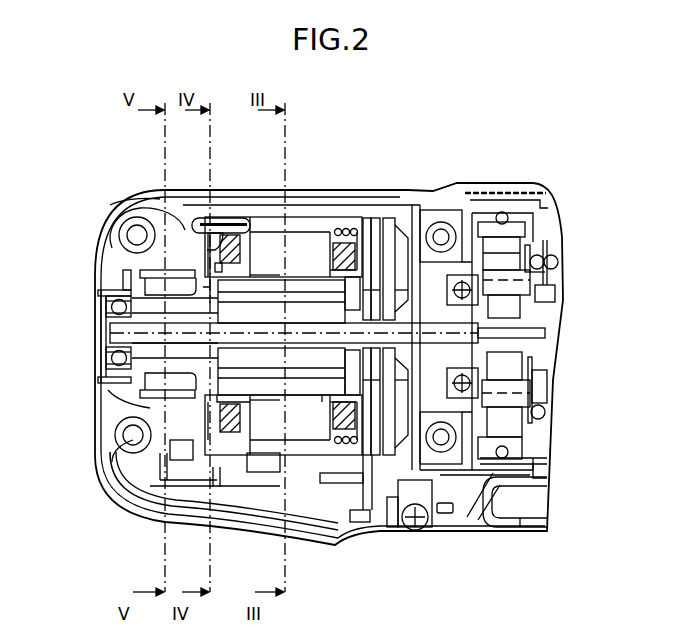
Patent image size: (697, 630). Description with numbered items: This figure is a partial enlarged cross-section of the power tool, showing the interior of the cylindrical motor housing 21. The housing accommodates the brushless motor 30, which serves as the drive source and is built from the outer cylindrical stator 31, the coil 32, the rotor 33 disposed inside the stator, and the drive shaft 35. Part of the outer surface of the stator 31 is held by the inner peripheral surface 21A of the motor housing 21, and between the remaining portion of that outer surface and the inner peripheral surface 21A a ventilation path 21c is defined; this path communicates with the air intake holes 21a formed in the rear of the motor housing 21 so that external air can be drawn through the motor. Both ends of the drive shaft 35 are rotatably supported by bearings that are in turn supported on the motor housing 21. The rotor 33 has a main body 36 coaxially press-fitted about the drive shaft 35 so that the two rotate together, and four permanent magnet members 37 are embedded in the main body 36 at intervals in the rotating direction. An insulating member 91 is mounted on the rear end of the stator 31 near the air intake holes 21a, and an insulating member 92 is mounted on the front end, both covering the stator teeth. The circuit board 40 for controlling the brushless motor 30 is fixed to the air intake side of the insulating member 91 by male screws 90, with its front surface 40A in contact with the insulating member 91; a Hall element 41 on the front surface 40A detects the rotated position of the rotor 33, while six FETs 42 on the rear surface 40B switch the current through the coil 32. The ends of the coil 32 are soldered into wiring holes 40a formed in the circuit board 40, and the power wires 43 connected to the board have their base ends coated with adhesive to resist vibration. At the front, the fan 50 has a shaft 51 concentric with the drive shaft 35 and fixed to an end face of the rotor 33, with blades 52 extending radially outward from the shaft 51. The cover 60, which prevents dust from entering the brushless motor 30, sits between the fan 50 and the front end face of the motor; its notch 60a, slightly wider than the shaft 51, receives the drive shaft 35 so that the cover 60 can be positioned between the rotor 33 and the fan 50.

The motor housing 21 is at (107, 198).
The inner peripheral surface 21A is at (115, 237).
The ventilation path 21c is at (113, 258).
The air intake holes 21a is at (88, 387).
The FETs 42 is at (115, 403).
The circuit board 40 is at (150, 248).
The wiring holes 40a is at (137, 232).
The rear surface 40B is at (117, 433).
The front surface 40A is at (218, 472).
The male screws 90 is at (200, 225).
The Hall element 41 is at (225, 240).
The coil 32 is at (240, 250).
The brushless motor 30 is at (313, 312).
The stator 31 is at (303, 313).
The drive shaft 35 is at (415, 330).
The insulating member 91 is at (255, 265).
The insulating member 92 is at (350, 297).
The rotor 33 is at (425, 108).
The main body 36 is at (367, 290).
The permanent magnet members 37 is at (399, 300).
The fan 50 is at (567, 335).
The blades 52 is at (517, 365).
The shaft 51 is at (612, 363).
The power wires 43 is at (367, 398).
The cover 60 is at (380, 513).
The notch 60a is at (450, 513).